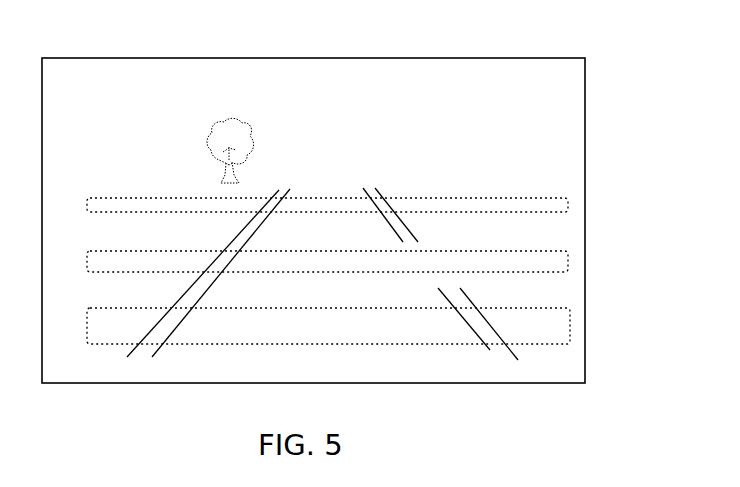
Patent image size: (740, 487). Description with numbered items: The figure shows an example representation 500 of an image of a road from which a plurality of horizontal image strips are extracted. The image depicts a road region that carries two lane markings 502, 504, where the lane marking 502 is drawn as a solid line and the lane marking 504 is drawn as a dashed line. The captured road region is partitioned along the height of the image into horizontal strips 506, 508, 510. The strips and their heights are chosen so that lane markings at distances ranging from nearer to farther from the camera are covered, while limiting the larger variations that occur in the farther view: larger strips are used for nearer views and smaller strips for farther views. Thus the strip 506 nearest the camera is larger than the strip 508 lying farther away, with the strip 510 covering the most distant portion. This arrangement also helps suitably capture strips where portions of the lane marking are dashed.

The example representation 500 is at (430, 58).
The lane marking 502 is at (147, 355).
The lane marking 504 is at (488, 347).
The strip 506 is at (565, 305).
The strip 508 is at (565, 248).
The strip 510 is at (565, 198).